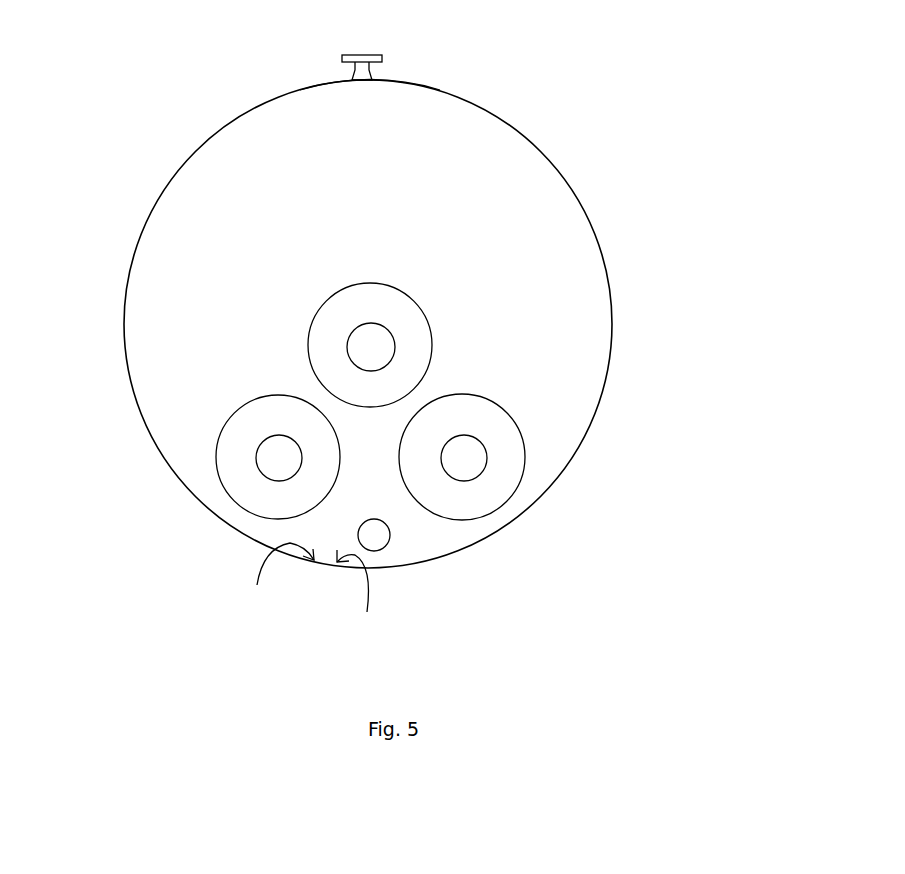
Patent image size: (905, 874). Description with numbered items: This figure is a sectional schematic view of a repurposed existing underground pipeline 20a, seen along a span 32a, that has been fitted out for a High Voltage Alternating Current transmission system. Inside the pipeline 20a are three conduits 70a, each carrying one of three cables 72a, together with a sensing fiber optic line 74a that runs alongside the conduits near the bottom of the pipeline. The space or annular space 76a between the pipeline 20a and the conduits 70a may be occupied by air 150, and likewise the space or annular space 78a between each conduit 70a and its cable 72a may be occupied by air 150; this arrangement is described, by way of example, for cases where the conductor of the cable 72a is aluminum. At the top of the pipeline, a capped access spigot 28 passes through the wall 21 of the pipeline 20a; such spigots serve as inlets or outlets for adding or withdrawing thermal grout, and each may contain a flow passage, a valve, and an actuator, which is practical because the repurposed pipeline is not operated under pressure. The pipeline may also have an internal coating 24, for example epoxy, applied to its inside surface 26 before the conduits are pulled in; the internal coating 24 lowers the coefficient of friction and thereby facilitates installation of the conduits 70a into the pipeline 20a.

The existing underground pipeline 20a is at (590, 222).
The wall 21 is at (415, 82).
The capped access spigot 28 is at (382, 58).
The span 32a is at (611, 133).
The air 150 is at (245, 170).
The annular space 76a is at (235, 281).
The annular space 78a is at (389, 309).
The conduit 70a is at (517, 428).
The cable 72a is at (486, 461).
The sensing fiber optic line 74a is at (382, 549).
The internal coating 24 is at (272, 577).
The inside surface 26 is at (355, 592).